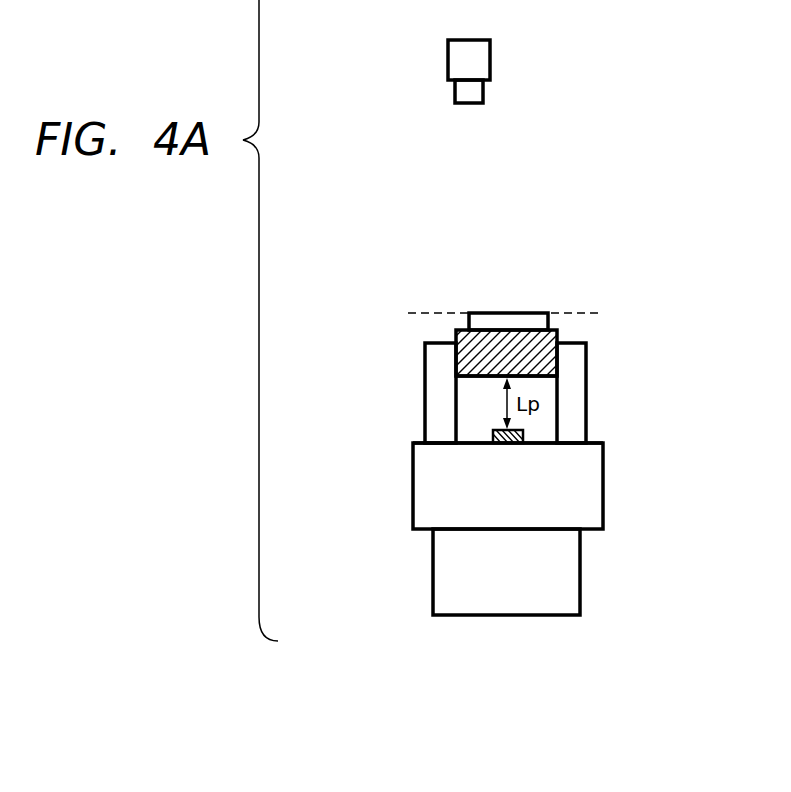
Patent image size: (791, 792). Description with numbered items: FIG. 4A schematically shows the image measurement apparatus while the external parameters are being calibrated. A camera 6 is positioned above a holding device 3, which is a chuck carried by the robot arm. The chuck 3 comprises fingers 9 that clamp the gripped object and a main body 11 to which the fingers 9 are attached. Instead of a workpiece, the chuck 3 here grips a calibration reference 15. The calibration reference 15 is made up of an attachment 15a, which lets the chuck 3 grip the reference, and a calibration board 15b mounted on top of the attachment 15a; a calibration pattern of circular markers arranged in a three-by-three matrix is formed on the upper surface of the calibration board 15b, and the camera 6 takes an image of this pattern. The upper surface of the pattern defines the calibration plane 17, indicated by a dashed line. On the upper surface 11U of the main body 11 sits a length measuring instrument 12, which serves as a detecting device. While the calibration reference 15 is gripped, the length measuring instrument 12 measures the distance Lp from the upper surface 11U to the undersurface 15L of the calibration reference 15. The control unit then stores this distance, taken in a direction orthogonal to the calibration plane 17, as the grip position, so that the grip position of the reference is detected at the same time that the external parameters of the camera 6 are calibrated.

The holding device 3 is at (511, 422).
The camera 6 is at (470, 40).
The finger 9 is at (425, 382).
The main body 11 is at (548, 511).
The upper surface 11U is at (543, 439).
The length measuring instrument 12 is at (510, 443).
The calibration reference 15 is at (476, 342).
The attachment 15a is at (452, 339).
The calibration board 15b is at (494, 320).
The undersurface of the calibration reference 15L is at (485, 378).
The calibration plane 17 is at (430, 313).